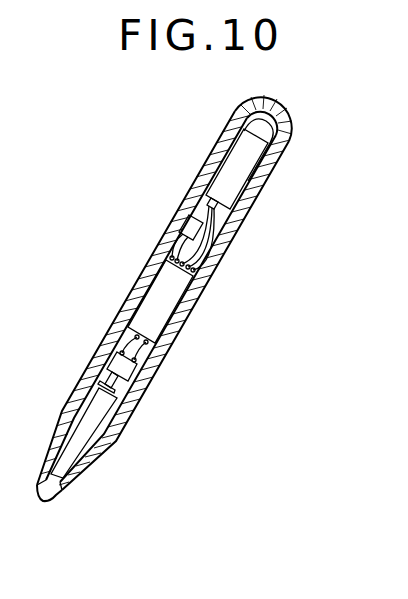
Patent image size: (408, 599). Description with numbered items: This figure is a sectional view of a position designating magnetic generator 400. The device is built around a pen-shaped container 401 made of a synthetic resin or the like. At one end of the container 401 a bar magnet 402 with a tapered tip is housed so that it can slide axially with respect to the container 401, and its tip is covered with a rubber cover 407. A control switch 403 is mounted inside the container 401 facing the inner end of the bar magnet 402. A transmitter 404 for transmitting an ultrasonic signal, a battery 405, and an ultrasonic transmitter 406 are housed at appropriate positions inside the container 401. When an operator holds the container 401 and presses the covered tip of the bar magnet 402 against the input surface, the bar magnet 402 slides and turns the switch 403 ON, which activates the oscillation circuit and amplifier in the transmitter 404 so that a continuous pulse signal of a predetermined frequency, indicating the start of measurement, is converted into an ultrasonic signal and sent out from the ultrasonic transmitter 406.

The position designating magnetic generator 400 is at (237, 253).
The pen-shaped container 401 is at (283, 108).
The bar magnet 402 is at (74, 468).
The control switch 403 is at (125, 368).
The transmitter 404 is at (175, 297).
The battery 405 is at (244, 167).
The ultrasonic transmitter 406 is at (178, 222).
The rubber cover 407 is at (40, 505).